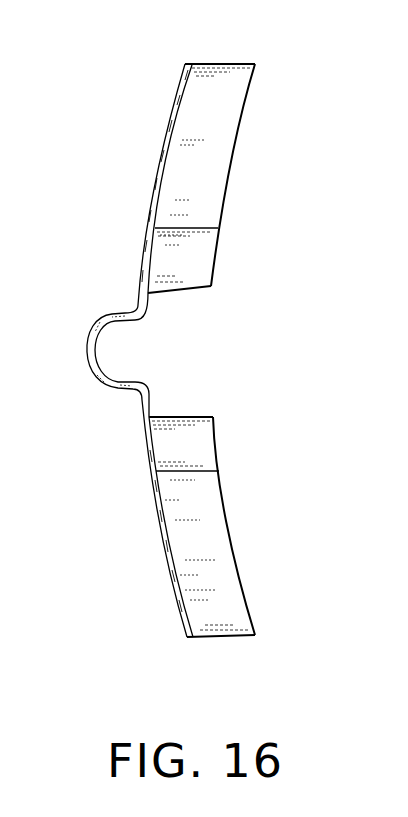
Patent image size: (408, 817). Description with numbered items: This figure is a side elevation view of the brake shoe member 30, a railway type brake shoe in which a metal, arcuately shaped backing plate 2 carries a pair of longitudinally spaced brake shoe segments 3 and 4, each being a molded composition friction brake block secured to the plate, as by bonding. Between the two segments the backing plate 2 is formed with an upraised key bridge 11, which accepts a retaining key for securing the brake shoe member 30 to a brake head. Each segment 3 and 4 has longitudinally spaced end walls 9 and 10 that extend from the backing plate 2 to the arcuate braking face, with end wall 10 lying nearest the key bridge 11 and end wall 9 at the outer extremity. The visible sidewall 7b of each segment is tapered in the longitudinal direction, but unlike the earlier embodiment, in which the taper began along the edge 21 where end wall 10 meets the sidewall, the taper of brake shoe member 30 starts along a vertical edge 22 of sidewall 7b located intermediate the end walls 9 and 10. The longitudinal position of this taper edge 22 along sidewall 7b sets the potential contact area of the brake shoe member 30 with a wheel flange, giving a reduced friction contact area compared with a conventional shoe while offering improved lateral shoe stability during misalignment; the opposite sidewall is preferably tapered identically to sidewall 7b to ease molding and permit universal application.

The brake shoe member 30 is at (146, 130).
The end wall 9 is at (222, 62).
The brake shoe segment 4 is at (220, 121).
The sidewall 7b is at (218, 168).
The vertical edge 22 is at (198, 228).
The edge 21 is at (198, 286).
The key bridge 11 is at (110, 313).
The end wall 10 is at (195, 413).
The backing plate 2 is at (162, 534).
The brake shoe segment 3 is at (214, 578).